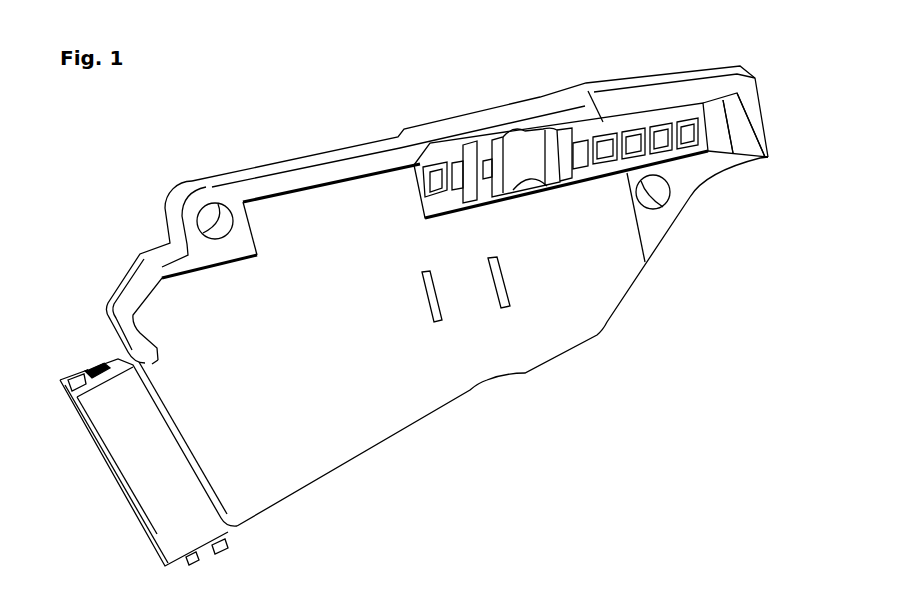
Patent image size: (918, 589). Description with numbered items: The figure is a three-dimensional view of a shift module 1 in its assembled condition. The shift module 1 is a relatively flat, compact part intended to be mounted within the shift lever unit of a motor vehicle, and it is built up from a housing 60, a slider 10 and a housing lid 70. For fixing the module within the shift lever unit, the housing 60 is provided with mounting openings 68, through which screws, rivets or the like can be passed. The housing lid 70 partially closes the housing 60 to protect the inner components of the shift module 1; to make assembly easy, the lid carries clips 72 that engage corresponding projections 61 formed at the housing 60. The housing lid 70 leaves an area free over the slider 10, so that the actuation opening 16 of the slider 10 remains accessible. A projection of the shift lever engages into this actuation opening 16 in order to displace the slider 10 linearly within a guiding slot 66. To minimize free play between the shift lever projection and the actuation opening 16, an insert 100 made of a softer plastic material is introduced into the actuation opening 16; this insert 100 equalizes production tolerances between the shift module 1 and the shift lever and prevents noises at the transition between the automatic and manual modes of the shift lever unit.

The shift module 1 is at (120, 144).
The slider 10 is at (601, 148).
The actuation opening 16 is at (482, 142).
The insert 100 is at (516, 150).
The housing 60 is at (333, 168).
The projections 61 is at (100, 366).
The guiding slot 66 is at (722, 130).
The mounting openings 68 is at (206, 216).
The housing lid 70 is at (410, 385).
The clips 72 is at (86, 372).